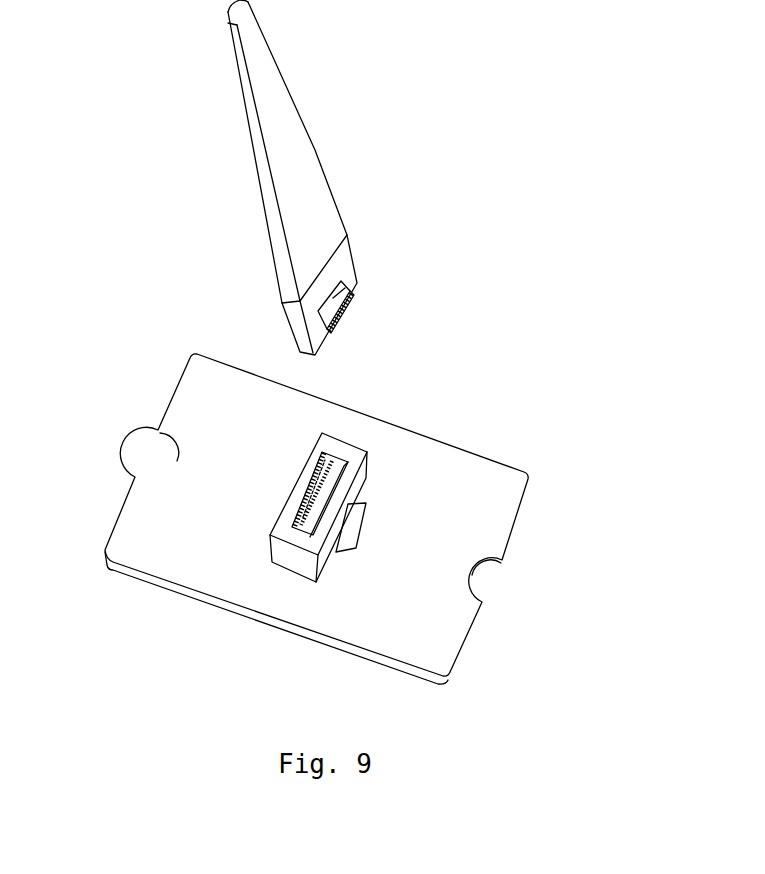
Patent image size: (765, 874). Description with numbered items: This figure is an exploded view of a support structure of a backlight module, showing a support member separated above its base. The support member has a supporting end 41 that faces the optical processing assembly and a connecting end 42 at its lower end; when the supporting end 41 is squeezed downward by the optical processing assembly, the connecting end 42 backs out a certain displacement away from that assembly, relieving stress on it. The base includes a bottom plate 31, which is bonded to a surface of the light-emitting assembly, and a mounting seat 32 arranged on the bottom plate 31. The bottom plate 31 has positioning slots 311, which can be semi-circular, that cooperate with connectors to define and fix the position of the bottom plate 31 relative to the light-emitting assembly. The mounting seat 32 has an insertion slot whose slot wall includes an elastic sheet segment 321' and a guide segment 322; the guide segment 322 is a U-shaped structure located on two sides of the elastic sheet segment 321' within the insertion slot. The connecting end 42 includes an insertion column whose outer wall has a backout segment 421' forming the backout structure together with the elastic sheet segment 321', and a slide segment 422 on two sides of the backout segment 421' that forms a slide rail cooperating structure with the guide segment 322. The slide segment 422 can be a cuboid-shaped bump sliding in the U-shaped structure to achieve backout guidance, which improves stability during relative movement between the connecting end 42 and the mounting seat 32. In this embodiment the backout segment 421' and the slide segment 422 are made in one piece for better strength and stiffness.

The bottom plate 31 is at (342, 519).
The positioning slot 311 is at (157, 430).
The mounting seat 32 is at (265, 450).
The elastic sheet segment 321' is at (231, 439).
The guide segment 322 is at (307, 473).
The supporting end 41 is at (308, 175).
The connecting end 42 is at (396, 278).
The backout segment 421' is at (384, 290).
The slide segment 422 is at (350, 258).